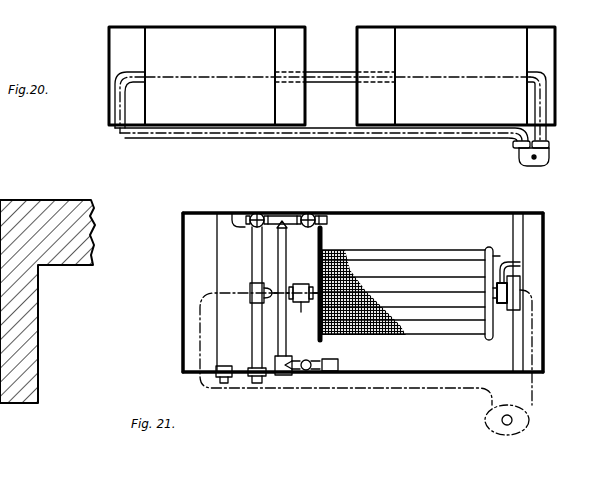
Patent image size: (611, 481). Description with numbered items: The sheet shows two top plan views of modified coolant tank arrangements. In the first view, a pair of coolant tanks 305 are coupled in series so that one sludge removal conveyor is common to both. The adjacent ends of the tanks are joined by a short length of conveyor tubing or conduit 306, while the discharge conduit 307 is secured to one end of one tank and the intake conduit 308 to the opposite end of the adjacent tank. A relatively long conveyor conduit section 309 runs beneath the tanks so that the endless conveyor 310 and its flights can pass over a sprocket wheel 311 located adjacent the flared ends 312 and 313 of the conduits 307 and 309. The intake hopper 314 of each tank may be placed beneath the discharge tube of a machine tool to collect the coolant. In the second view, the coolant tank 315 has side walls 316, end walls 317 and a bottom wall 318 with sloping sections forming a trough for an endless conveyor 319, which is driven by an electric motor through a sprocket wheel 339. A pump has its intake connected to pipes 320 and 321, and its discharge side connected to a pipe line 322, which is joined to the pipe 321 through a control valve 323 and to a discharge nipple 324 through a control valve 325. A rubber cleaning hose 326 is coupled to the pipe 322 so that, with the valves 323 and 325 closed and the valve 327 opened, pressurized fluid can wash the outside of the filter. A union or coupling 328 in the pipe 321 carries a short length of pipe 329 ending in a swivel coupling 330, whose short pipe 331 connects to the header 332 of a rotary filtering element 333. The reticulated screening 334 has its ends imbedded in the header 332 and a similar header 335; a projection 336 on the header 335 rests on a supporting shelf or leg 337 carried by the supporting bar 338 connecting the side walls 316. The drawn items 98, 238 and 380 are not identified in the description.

In FIG. 20, the coolant tank 305 is at (240, 24).
In FIG. 20, the intake hopper 314 is at (127, 35).
In FIG. 20, the intake conduit 308 is at (137, 73).
In FIG. 20, the conveyor tubing or conduit 306 is at (328, 70).
In FIG. 20, the endless conveyor 310 is at (459, 77).
In FIG. 20, the discharge conduit 307 is at (547, 134).
In FIG. 20, the conveyor conduit section 309 is at (316, 138).
In FIG. 20, the flared end 313 is at (516, 150).
In FIG. 20, the flared end 312 is at (549, 149).
In FIG. 20, the sprocket wheel 311 is at (532, 167).
In FIG. 21, the wall 98 is at (7, 184).
In FIG. 21, the wall 238 is at (67, 200).
In FIG. 21, the coolant tank 315 is at (550, 282).
In FIG. 21, the side walls 316 is at (410, 213).
In FIG. 21, the end walls 317 is at (183, 291).
In FIG. 21, the bottom wall 318 is at (440, 360).
In FIG. 21, the endless conveyor 319 is at (330, 388).
In FIG. 21, the sprocket wheel 339 is at (531, 414).
In FIG. 21, the supporting bar 338 is at (535, 352).
In FIG. 21, the pipe 380 is at (243, 213).
In FIG. 21, the control valve 323 is at (258, 212).
In FIG. 21, the control valve 325 is at (308, 212).
In FIG. 21, the discharge nipple 324 is at (321, 219).
In FIG. 21, the short length of pipe 329 is at (266, 305).
In FIG. 21, the pipe line 322 is at (283, 240).
In FIG. 21, the pipe 321 is at (323, 242).
In FIG. 21, the union or coupling 328 is at (261, 284).
In FIG. 21, the swivel coupling 330 is at (300, 284).
In FIG. 21, the short length of pipe 331 is at (301, 315).
In FIG. 21, the valve 327 is at (306, 359).
In FIG. 21, the rubber cleaning hose 326 is at (338, 360).
In FIG. 21, the pipe 320 is at (225, 383).
In FIG. 21, the rotary filtering element 333 is at (464, 250).
In FIG. 21, the header 332 is at (354, 266).
In FIG. 21, the reticulated screening 334 is at (452, 326).
In FIG. 21, the supporting shelf or leg 337 is at (500, 304).
In FIG. 21, the projection 336 is at (516, 265).
In FIG. 21, the header 335 is at (500, 256).